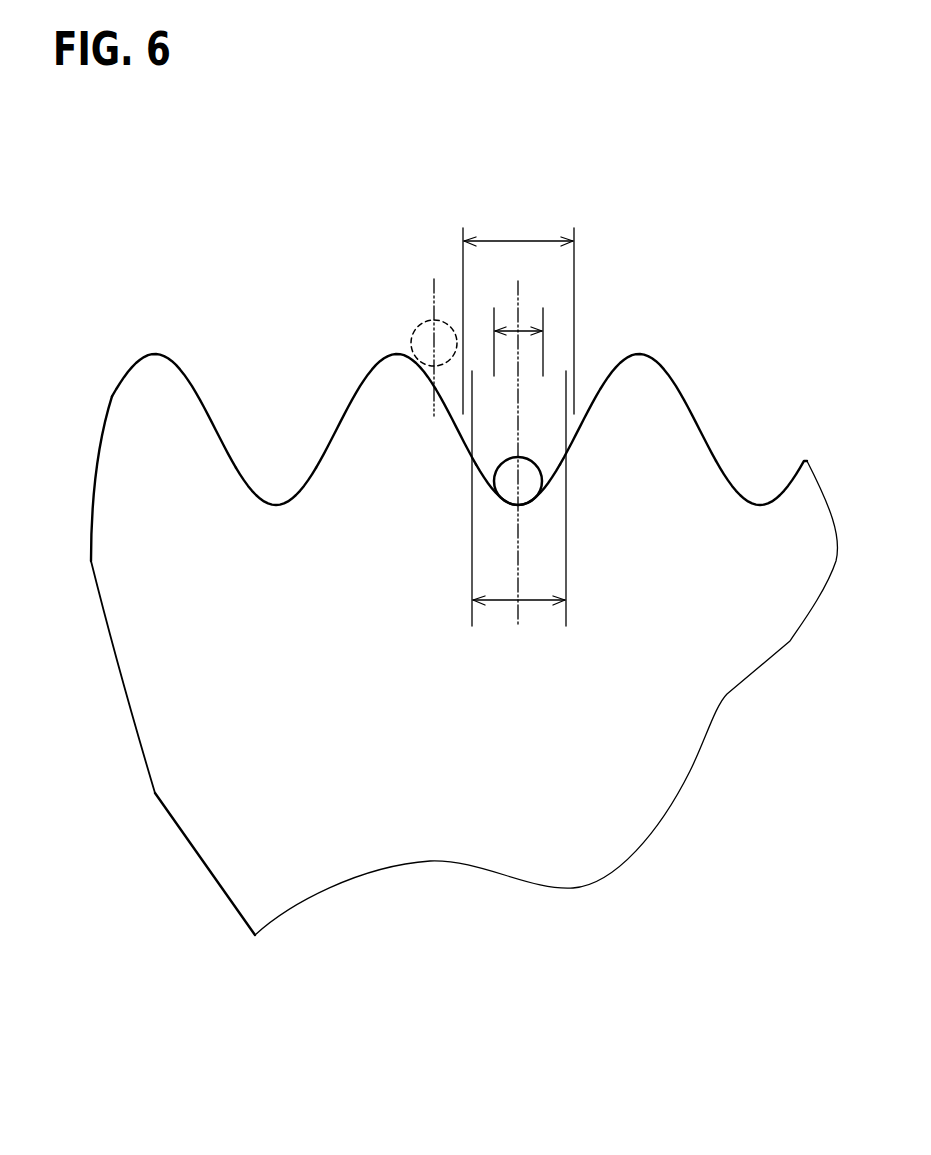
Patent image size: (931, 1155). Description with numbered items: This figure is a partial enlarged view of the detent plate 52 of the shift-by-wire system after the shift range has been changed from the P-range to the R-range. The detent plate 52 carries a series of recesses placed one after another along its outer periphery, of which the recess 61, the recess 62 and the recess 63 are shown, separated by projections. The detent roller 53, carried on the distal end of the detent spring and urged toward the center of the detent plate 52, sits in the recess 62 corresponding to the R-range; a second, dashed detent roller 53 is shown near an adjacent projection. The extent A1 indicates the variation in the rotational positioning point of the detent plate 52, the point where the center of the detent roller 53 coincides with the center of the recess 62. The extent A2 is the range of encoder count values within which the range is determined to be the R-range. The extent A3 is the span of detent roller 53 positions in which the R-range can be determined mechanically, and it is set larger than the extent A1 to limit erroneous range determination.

The detent plate 52 is at (130, 334).
The detent roller 53 is at (413, 343).
The recess 61 is at (275, 502).
The recess 62 is at (507, 492).
The recess 63 is at (762, 502).
The extent of positioning point variation A1 is at (522, 329).
The range determination extent A2 is at (535, 601).
The extent meeting range determination requirement A3 is at (527, 239).